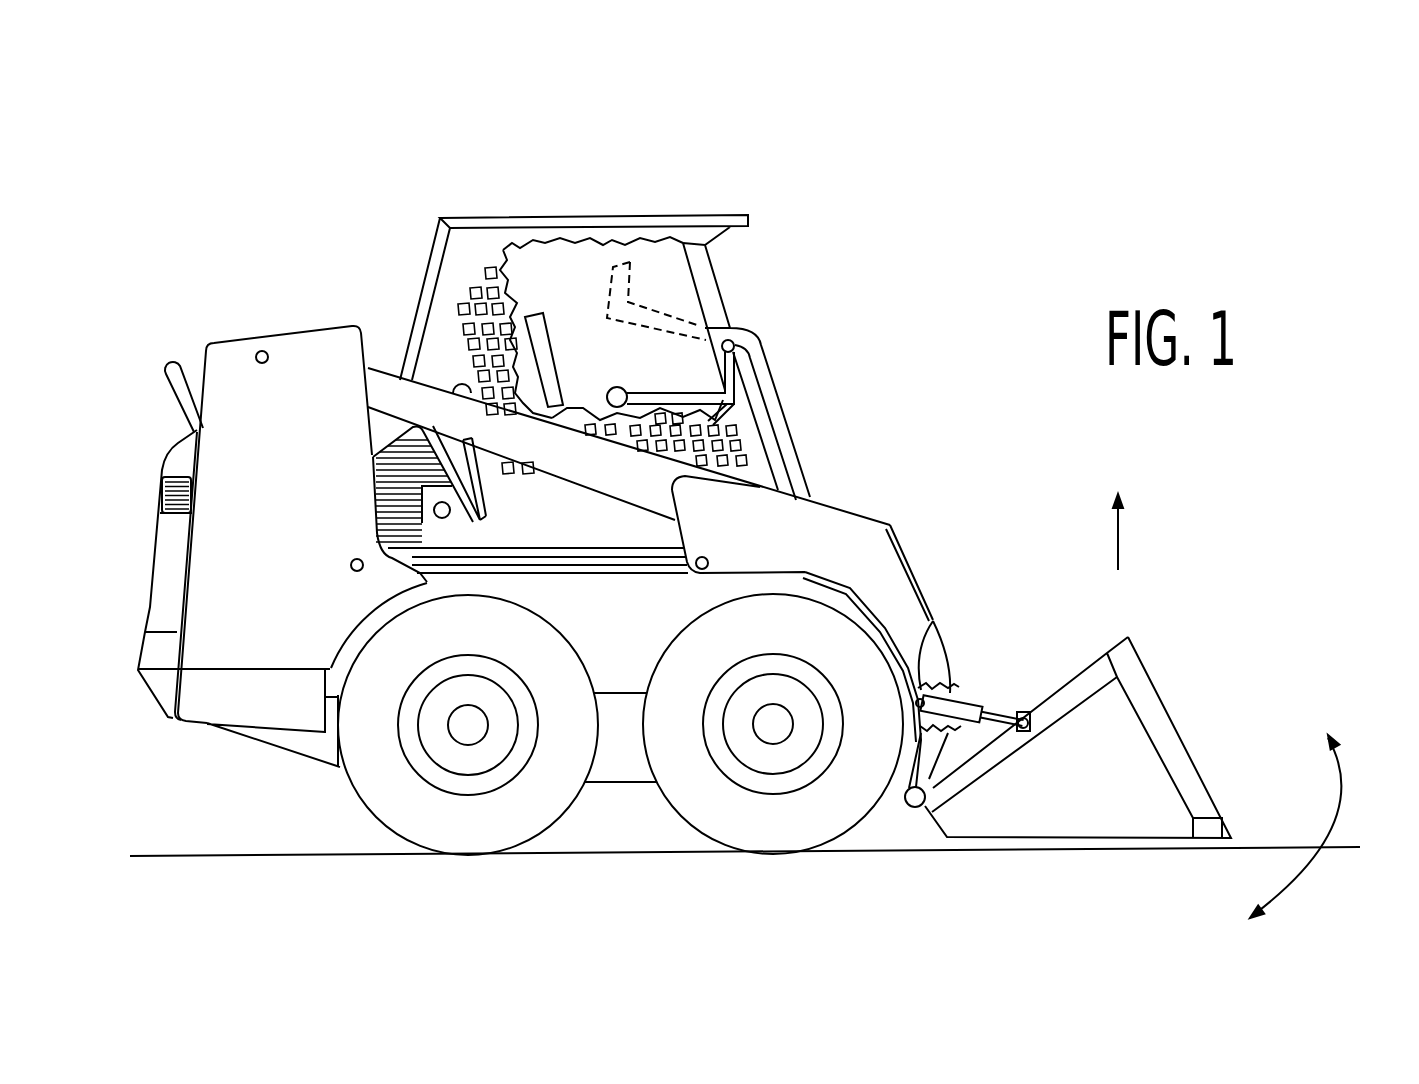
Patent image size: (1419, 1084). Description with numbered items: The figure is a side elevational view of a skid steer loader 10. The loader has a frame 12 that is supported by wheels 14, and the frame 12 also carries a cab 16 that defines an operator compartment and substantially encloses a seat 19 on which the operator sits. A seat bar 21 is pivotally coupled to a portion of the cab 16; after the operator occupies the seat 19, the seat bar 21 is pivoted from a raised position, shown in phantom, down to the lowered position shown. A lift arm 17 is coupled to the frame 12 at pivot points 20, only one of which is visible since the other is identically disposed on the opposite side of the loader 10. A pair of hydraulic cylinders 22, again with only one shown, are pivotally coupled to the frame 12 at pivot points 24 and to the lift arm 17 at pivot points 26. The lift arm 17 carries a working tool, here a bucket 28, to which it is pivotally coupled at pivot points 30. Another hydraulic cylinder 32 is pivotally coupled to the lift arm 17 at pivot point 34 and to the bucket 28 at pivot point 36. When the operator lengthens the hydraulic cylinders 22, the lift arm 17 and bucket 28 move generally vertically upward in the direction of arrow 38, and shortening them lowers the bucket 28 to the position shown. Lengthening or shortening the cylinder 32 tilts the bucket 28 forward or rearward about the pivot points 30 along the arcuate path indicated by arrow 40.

The skid steer loader 10 is at (804, 313).
The frame 12 is at (203, 700).
The wheels 14 is at (512, 848).
The cab 16 is at (646, 216).
The lift arm 17 is at (928, 566).
The seat 19 is at (552, 312).
The pivot points 20 is at (263, 352).
The seat bar 21 is at (743, 373).
The hydraulic cylinders 22 is at (632, 548).
The pivot points 24 is at (352, 558).
The pivot points 26 is at (708, 560).
The bucket 28 is at (1163, 722).
The pivot points 30 is at (908, 806).
The hydraulic cylinder 32 is at (965, 710).
The pivot point 34 is at (933, 626).
The pivot point 36 is at (1024, 712).
The arrow 38 is at (1122, 548).
The arrow 40 is at (1336, 793).